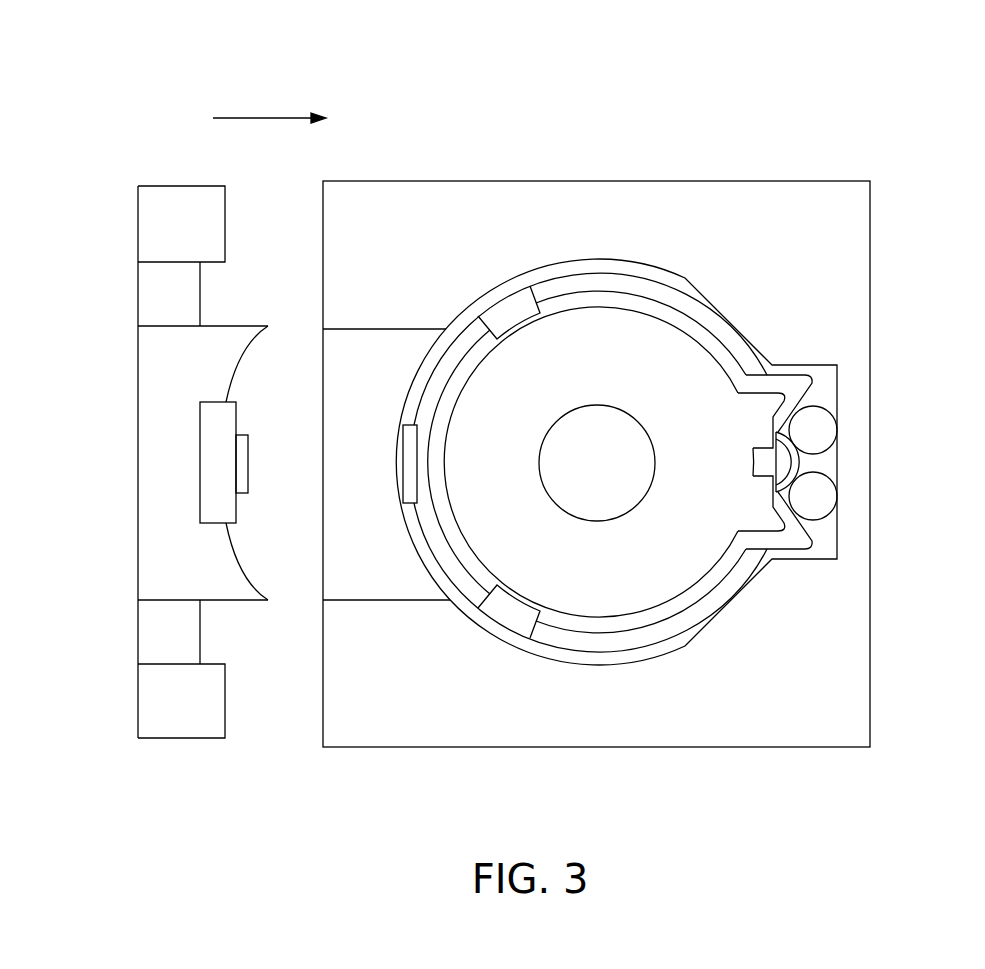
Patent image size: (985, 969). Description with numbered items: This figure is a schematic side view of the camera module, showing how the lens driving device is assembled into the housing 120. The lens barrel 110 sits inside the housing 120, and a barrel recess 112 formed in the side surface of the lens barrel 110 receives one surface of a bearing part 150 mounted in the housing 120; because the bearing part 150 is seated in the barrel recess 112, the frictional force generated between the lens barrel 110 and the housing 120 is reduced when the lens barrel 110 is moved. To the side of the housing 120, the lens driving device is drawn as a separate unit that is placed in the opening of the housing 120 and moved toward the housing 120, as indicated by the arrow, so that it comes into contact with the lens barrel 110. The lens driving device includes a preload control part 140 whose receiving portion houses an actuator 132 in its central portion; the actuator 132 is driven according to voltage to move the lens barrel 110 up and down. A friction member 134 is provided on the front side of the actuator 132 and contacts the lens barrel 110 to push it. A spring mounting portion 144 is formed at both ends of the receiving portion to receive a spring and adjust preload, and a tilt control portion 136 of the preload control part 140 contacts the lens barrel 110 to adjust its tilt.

The lens barrel 110 is at (604, 590).
The barrel recess 112 is at (815, 522).
The housing 120 is at (805, 218).
The actuator 132 is at (215, 483).
The friction member 134 is at (242, 458).
The tilt control portion 136 is at (255, 590).
The preload control part 140 is at (167, 516).
The spring mounting portion 144 is at (178, 725).
The bearing part 150 is at (822, 426).